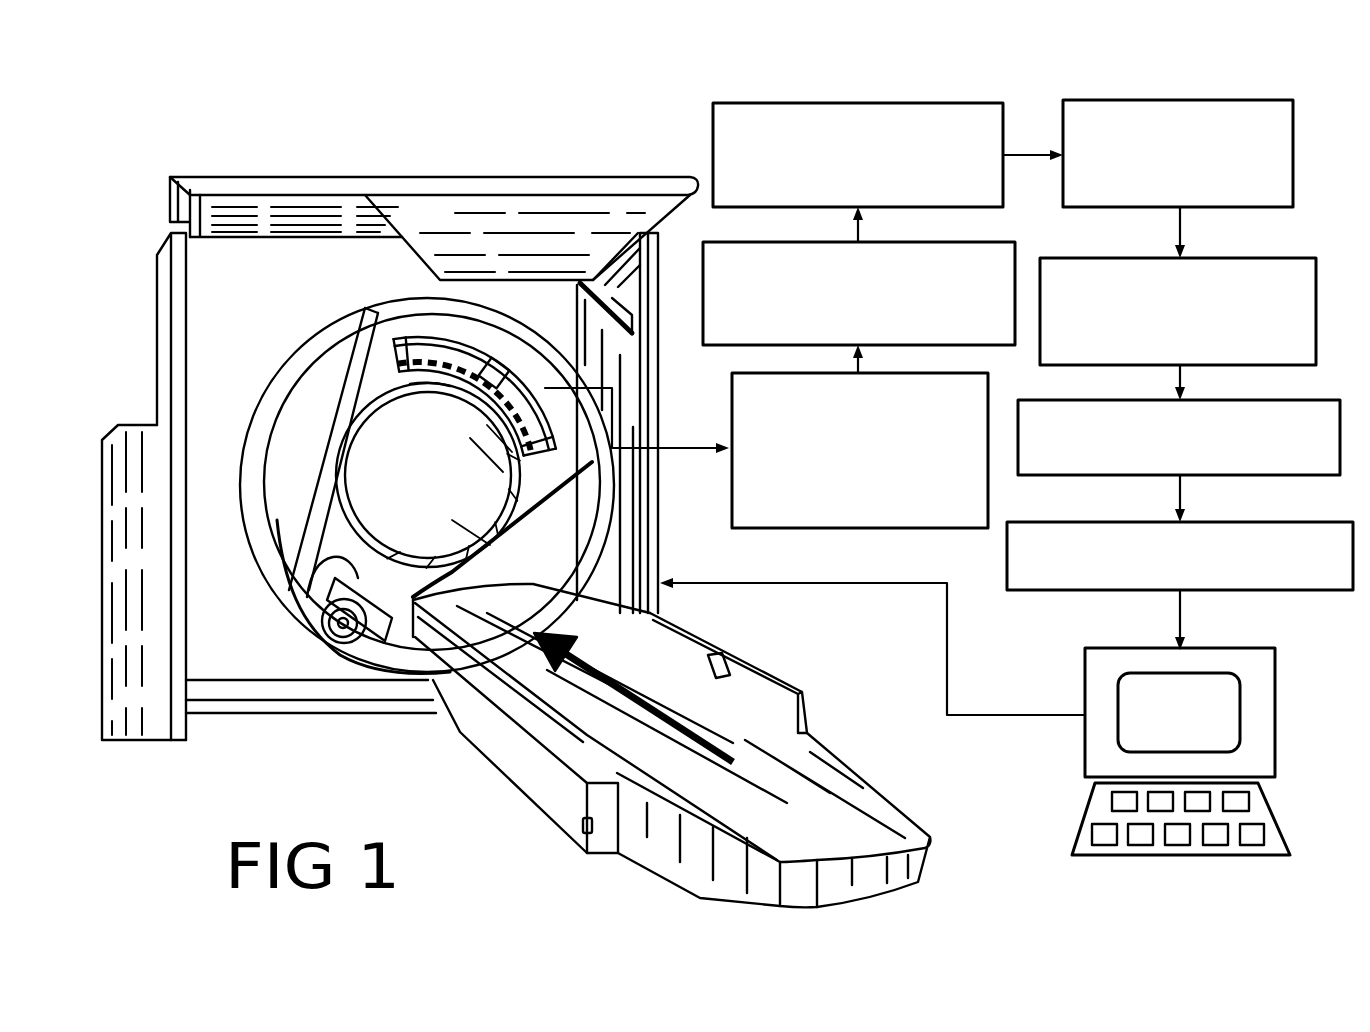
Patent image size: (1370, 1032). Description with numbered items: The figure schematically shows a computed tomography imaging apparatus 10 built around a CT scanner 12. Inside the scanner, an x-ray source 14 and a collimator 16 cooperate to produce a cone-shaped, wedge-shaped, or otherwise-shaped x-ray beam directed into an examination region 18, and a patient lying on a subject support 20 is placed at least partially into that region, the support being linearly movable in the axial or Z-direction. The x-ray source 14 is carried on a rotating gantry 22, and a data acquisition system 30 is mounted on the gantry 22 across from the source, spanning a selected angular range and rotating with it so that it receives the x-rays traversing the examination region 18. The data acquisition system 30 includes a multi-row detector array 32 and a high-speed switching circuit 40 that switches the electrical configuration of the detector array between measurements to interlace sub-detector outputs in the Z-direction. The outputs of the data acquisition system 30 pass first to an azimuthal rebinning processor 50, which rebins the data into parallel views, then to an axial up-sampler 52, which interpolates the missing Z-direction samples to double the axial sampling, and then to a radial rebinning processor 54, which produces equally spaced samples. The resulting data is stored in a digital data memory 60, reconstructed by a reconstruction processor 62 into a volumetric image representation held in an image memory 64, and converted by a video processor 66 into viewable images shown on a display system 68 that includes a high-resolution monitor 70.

The computed tomography imaging apparatus 10 is at (455, 115).
The CT scanner 12 is at (505, 160).
The x-ray source 14 is at (325, 636).
The collimator 16 is at (320, 563).
The examination region 18 is at (388, 462).
The subject support 20 is at (860, 810).
The rotating gantry 22 is at (340, 450).
The data acquisition system 30 is at (590, 470).
The detector array 32 is at (437, 377).
The high-speed switching circuit 40 is at (498, 365).
The azimuthal rebinning processor 50 is at (972, 518).
The axial up-sampler 52 is at (965, 339).
The radial rebinning processor 54 is at (963, 203).
The digital data memory 60 is at (1277, 196).
The reconstruction processor 62 is at (1285, 354).
The image memory 64 is at (1330, 458).
The video processor 66 is at (1340, 576).
The display system 68 is at (1277, 722).
The high-resolution monitor 70 is at (1195, 729).